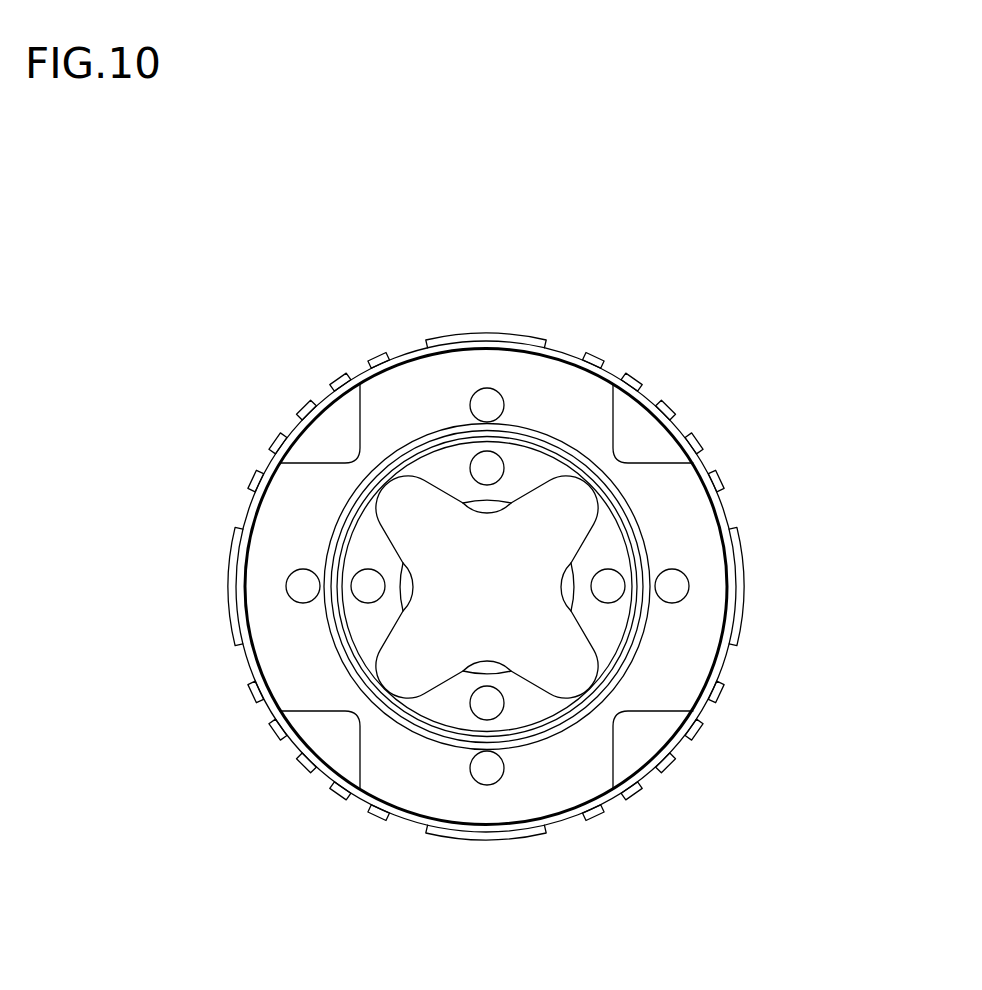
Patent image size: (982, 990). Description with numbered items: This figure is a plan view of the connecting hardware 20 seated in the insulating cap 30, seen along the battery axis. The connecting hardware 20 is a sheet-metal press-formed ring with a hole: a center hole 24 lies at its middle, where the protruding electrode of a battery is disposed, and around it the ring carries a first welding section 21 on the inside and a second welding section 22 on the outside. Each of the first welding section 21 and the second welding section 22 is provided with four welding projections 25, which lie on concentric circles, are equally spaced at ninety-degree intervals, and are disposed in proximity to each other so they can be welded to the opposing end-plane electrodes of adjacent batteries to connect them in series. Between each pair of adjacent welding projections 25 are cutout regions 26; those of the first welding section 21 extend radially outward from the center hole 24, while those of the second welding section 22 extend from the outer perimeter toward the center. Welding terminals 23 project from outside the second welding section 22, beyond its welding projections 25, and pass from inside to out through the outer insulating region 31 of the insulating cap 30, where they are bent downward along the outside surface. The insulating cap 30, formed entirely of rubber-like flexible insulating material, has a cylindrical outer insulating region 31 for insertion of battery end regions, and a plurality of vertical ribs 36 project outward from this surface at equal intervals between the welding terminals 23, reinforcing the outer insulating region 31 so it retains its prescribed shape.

The connecting hardware 20 is at (670, 545).
The first welding section 21 is at (365, 626).
The second welding section 22 is at (265, 624).
The welding terminal 23 is at (530, 338).
The center hole 24 is at (473, 551).
The welding projection 25 is at (303, 586).
The cutout region 26 is at (568, 492).
The insulating cap 30 is at (749, 480).
The outer insulating region 31 is at (562, 818).
The vertical rib 36 is at (305, 410).